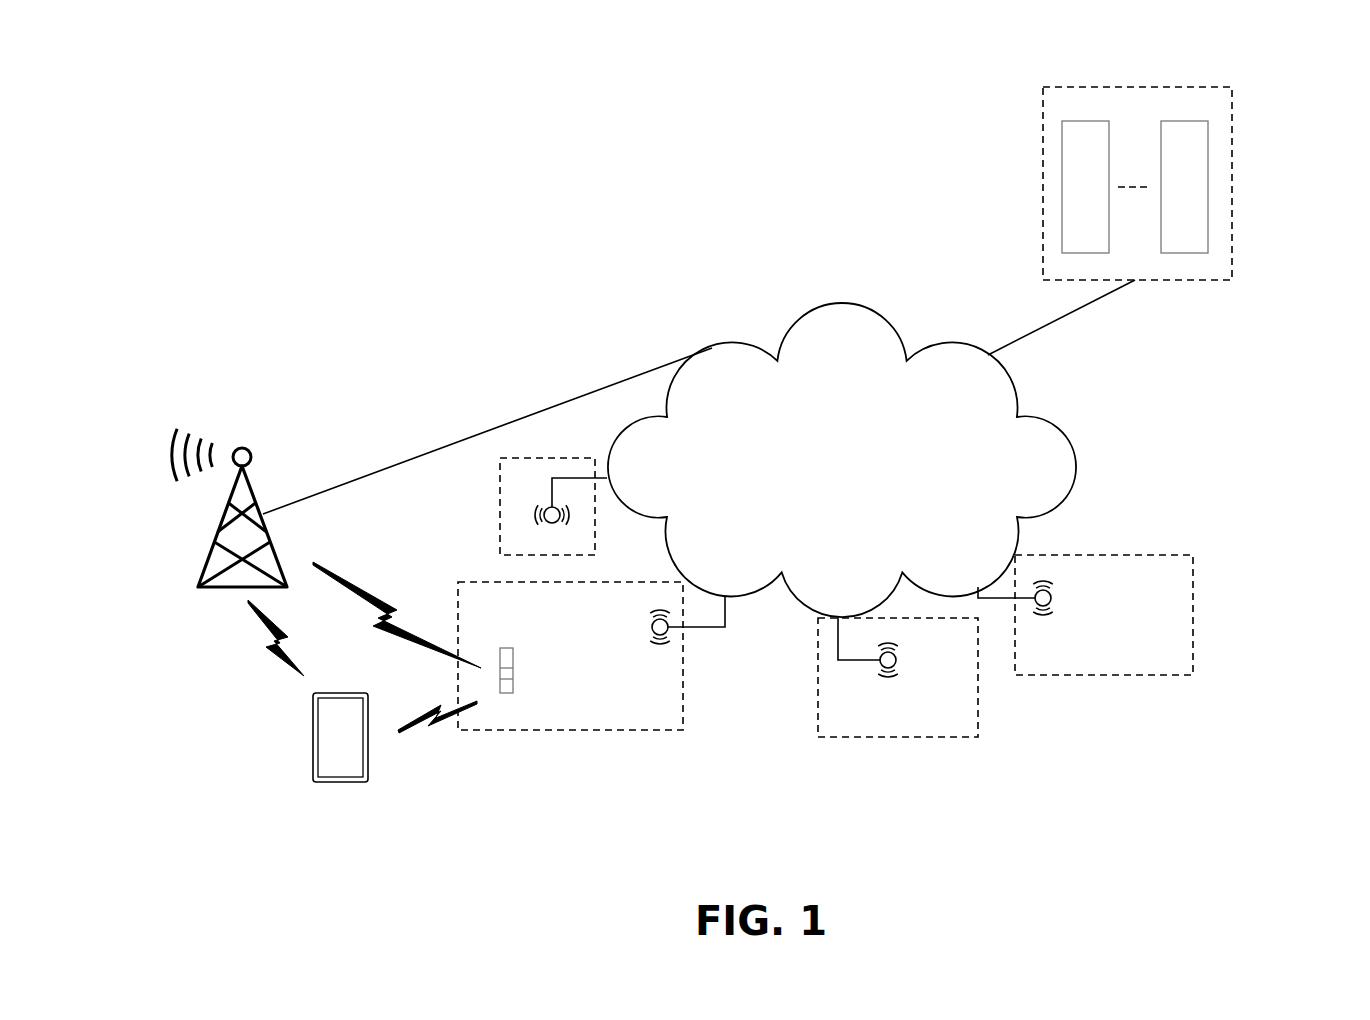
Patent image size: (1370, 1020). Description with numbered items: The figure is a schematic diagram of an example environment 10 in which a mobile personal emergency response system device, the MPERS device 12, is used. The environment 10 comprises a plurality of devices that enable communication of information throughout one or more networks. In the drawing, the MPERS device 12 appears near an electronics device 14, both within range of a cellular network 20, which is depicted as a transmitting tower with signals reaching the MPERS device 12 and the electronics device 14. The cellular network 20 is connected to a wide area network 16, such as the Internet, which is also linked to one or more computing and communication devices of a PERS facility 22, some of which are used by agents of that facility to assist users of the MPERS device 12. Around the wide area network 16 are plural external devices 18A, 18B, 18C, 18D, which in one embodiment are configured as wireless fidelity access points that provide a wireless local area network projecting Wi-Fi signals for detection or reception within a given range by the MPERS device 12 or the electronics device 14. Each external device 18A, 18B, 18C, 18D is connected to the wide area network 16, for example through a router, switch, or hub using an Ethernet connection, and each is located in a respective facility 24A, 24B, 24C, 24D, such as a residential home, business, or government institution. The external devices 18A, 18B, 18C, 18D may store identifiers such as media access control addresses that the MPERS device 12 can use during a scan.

The environment 10 is at (260, 140).
The MPERS device 12 is at (514, 667).
The electronics device 14 is at (340, 737).
The wide area network 16 is at (842, 460).
The external device 18A is at (553, 507).
The external device 18B is at (648, 633).
The external device 18C is at (898, 667).
The external device 18D is at (1053, 607).
The cellular network 20 is at (283, 380).
The PERS facility 22 is at (1232, 153).
The facility 24A is at (500, 483).
The facility 24B is at (570, 730).
The facility 24C is at (882, 737).
The facility 24D is at (1158, 675).